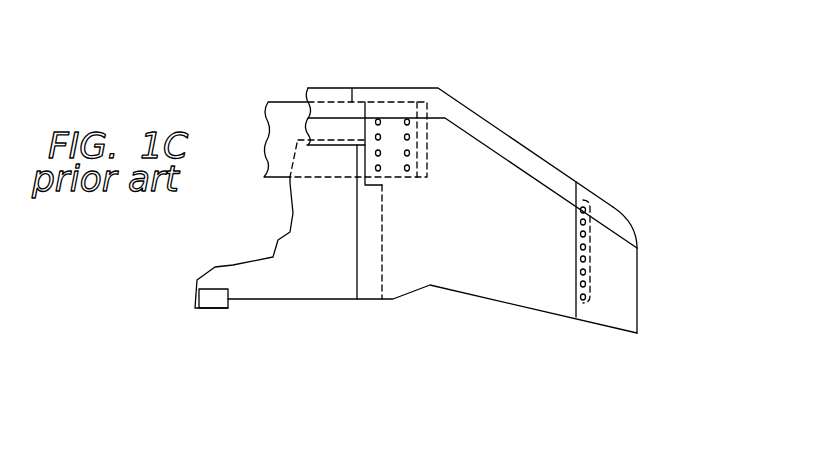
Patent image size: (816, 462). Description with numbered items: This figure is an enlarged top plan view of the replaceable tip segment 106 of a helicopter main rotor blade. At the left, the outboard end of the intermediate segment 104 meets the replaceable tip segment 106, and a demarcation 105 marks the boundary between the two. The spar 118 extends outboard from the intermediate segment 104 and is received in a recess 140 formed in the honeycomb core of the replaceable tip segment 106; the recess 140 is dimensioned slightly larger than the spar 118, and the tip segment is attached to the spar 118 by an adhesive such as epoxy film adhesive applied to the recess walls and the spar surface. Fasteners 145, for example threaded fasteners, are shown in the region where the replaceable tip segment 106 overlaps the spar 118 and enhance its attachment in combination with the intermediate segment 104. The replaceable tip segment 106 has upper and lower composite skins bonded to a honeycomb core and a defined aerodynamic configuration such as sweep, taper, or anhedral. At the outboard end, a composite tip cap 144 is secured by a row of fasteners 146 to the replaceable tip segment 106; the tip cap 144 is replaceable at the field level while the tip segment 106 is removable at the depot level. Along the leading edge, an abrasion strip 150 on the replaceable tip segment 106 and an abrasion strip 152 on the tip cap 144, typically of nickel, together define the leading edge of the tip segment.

The intermediate segment 104 is at (268, 287).
The demarcation 105 is at (382, 277).
The replaceable tip segment 106 is at (445, 360).
The spar 118 is at (285, 112).
The recess 140 is at (407, 107).
The composite tip cap 144 is at (618, 313).
The fasteners 145 is at (382, 172).
The fasteners 146 is at (590, 271).
The abrasion strip 150 is at (515, 152).
The abrasion strip 152 is at (608, 218).